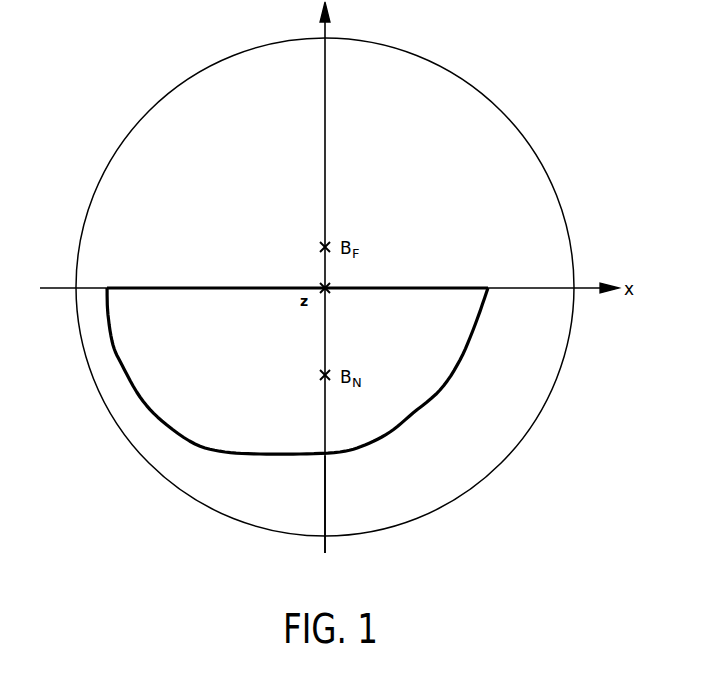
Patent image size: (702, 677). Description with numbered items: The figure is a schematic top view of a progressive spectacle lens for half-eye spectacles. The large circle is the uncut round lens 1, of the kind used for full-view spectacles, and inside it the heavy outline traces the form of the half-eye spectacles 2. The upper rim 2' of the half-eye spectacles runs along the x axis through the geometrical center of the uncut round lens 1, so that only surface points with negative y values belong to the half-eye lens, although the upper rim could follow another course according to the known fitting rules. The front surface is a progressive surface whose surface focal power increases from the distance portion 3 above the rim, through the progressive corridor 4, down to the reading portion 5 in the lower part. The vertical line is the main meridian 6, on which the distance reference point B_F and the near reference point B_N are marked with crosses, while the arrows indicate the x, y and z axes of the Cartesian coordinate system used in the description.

The uncut round lens 1 is at (104, 178).
The form of the half-eye spectacles 2 is at (301, 371).
The upper rim of the half-eye spectacles 2' is at (297, 268).
The distance portion 3 is at (428, 166).
The progressive corridor 4 is at (428, 333).
The reading portion 5 is at (388, 423).
The main meridian 6 is at (326, 492).